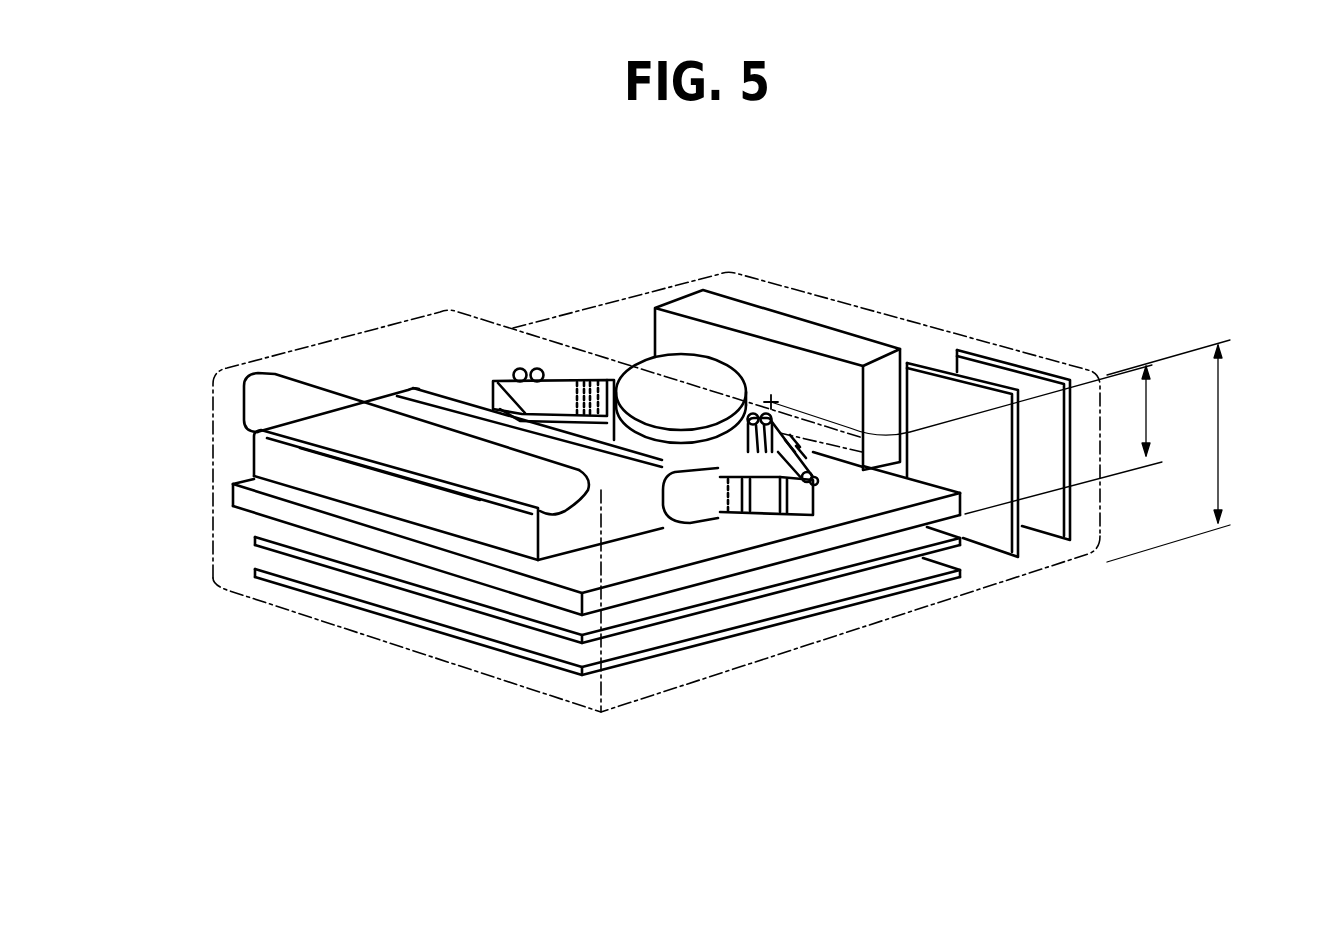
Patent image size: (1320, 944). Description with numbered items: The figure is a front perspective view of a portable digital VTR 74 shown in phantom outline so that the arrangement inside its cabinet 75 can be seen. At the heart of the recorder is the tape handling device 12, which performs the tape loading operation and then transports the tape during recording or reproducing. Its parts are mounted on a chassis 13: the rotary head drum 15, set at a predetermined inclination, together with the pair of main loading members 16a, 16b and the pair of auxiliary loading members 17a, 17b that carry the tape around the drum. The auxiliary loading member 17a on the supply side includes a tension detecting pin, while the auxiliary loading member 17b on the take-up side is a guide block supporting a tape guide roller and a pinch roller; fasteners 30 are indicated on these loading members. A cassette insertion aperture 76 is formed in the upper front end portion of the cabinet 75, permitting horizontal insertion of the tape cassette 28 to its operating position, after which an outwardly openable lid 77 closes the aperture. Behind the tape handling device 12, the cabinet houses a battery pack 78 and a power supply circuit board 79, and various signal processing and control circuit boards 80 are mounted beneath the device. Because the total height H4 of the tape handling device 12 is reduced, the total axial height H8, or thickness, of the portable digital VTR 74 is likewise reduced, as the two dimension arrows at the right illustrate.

The tape handling device 12 is at (781, 396).
The chassis 13 is at (240, 502).
The rotary head drum 15 is at (633, 352).
The main loading member 16a is at (608, 365).
The main loading member 16b is at (768, 401).
The auxiliary loading member 17a is at (503, 366).
The auxiliary loading member 17b is at (817, 497).
The tape cassette 28 is at (278, 456).
The screws 30 is at (565, 384).
The portable digital VTR 74 is at (683, 262).
The cabinet 75 is at (670, 693).
The cassette insertion aperture 76 is at (413, 480).
The lid 77 is at (332, 415).
The battery pack 78 is at (730, 317).
The power supply circuit board 79 is at (980, 367).
The signal processing and control circuit boards 80 is at (825, 581).
The total height of the tape handling device H4 is at (1147, 421).
The total axial height of the portable digital VTR H8 is at (1222, 433).